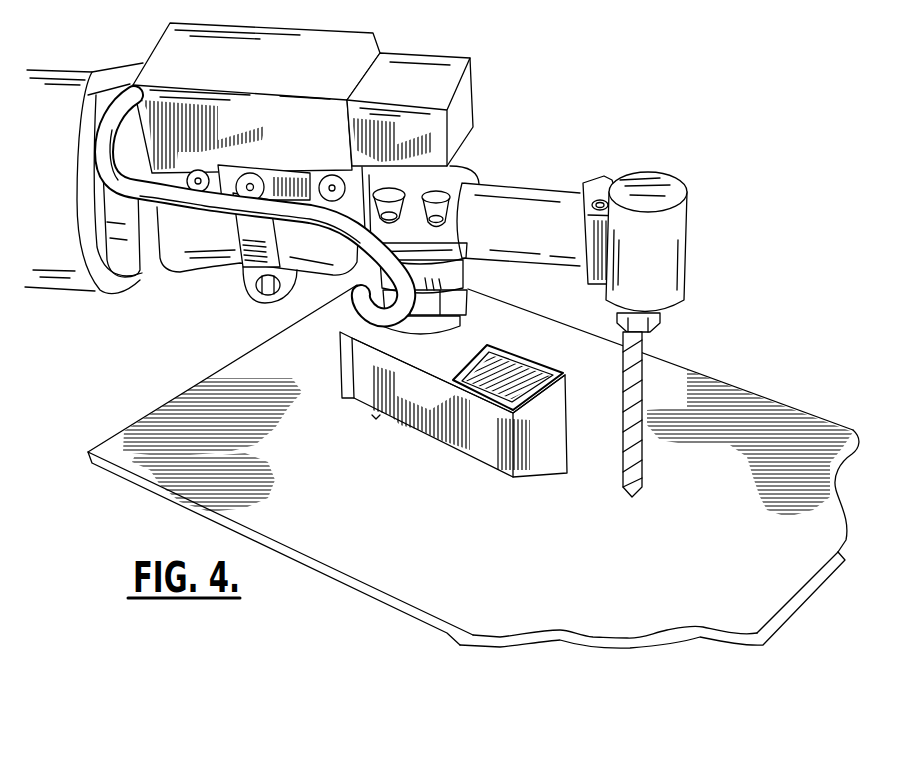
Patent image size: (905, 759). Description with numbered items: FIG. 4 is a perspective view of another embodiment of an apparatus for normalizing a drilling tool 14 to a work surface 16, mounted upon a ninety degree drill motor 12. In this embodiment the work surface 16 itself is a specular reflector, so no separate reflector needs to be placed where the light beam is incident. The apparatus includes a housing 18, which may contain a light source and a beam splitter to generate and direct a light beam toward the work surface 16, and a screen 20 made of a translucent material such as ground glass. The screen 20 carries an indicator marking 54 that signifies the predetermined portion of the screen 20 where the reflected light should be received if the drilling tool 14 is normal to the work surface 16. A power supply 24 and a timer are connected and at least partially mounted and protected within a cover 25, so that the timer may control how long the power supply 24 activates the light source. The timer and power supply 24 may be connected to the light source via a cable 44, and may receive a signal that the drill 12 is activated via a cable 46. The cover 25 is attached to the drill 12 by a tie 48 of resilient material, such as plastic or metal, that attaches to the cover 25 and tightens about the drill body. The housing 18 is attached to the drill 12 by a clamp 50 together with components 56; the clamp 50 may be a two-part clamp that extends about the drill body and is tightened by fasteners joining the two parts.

The 90 degree drill motor 12 is at (63, 285).
The drilling tool 14 is at (627, 402).
The work surface 16 is at (670, 373).
The housing 18 is at (540, 447).
The screen 20 is at (493, 357).
The power supply 24 is at (437, 43).
The cover 25 is at (267, 13).
The cable 44 is at (360, 311).
The cable 46 is at (125, 67).
The tie 48 is at (245, 275).
The clamp 50 is at (460, 157).
The indicator marking 54 is at (513, 373).
The components 56 is at (472, 270).